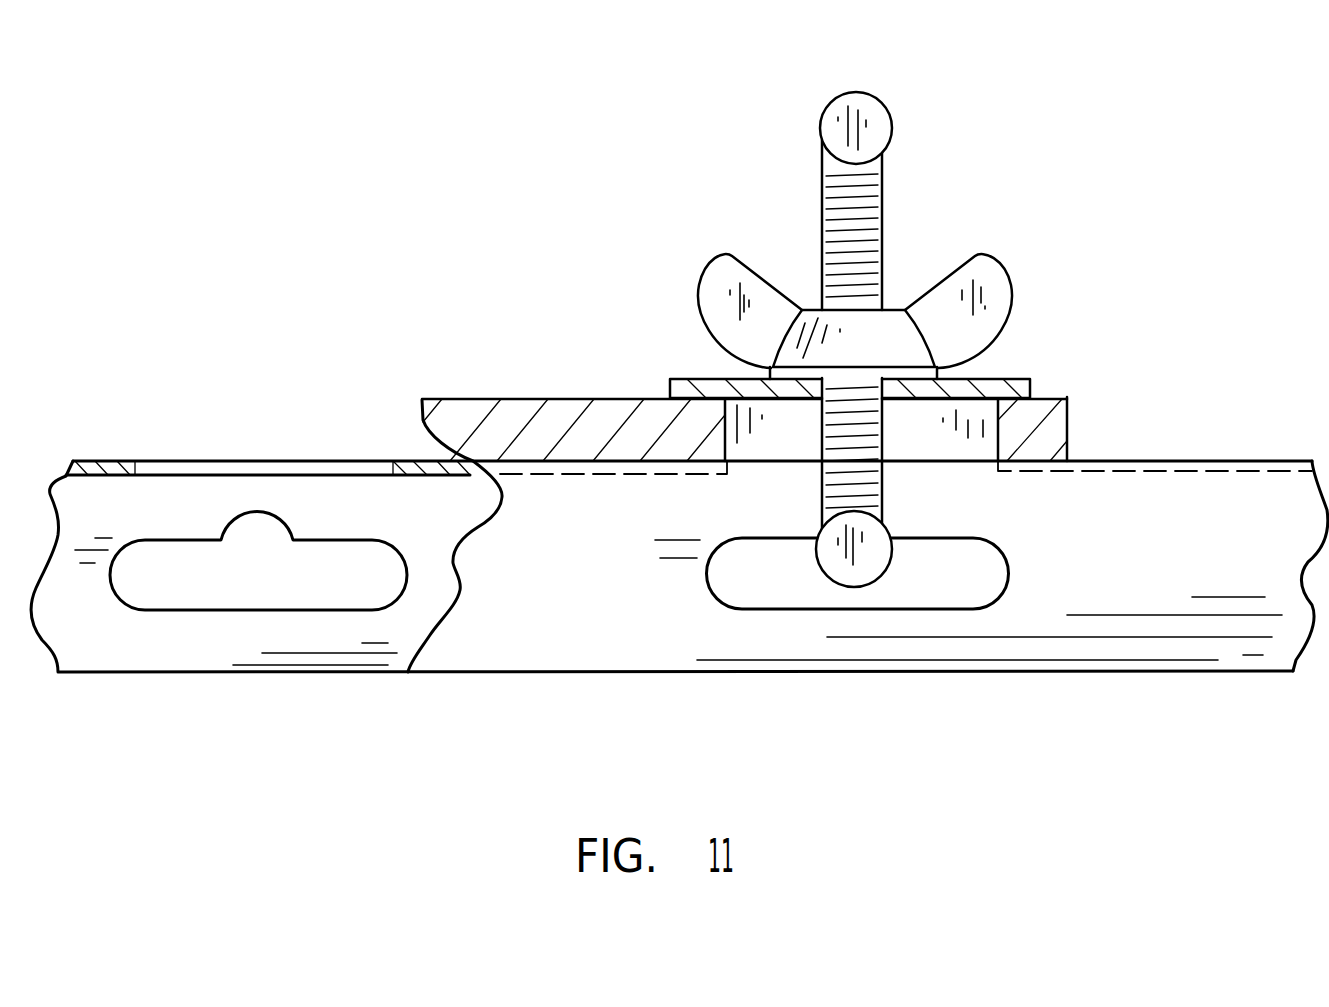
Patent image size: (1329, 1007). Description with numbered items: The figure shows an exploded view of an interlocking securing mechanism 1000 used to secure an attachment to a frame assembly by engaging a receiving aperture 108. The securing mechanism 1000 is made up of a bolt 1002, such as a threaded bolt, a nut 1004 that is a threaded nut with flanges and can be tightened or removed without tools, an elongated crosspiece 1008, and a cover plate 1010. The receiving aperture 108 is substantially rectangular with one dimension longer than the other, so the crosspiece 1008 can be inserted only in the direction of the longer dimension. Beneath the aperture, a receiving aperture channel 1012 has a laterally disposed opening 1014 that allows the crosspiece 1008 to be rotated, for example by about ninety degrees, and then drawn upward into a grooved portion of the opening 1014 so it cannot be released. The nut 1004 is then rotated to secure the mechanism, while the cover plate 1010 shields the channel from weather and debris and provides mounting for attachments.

The interlocking securing mechanism 1000 is at (318, 195).
The bolt 1002 is at (885, 212).
The nut 1004 is at (997, 257).
The cover plate 1010 is at (993, 377).
The receiving aperture 108 is at (968, 423).
The receiving aperture channel 1012 is at (475, 673).
The laterally disposed opening 1014 is at (805, 610).
The elongated crosspiece 1008 is at (887, 572).